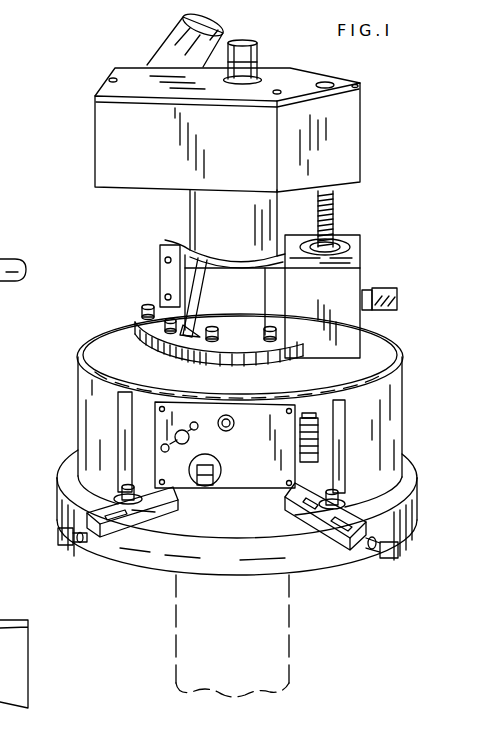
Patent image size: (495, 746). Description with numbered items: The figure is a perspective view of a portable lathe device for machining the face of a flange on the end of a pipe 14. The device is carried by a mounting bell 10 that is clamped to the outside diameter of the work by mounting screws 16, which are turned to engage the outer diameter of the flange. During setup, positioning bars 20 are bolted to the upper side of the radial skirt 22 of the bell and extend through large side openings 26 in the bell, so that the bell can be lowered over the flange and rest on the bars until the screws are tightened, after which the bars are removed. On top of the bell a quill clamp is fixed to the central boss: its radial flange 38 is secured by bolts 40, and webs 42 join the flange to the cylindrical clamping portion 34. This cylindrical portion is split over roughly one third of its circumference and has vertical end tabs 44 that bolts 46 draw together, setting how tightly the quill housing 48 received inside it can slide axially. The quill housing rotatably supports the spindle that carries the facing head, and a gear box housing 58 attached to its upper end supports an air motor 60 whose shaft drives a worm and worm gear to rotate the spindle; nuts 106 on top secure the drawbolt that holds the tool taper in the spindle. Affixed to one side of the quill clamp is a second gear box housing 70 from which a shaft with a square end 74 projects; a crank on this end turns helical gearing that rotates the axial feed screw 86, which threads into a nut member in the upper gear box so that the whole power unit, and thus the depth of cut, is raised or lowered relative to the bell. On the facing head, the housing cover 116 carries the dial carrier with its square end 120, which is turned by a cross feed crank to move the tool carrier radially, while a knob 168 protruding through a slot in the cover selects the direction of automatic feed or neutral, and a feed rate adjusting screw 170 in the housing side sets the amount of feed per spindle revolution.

The mounting bell 10 is at (78, 345).
The pipe 14 is at (290, 636).
The mounting screws 16 is at (58, 533).
The positioning bars 20 is at (100, 540).
The radial skirt 22 is at (222, 568).
The side openings 26 is at (120, 410).
The cylindrical clamping portion 34 is at (190, 262).
The radial flange 38 is at (244, 345).
The bolts 40 is at (144, 310).
The webs 42 is at (205, 306).
The vertical end tabs 44 is at (160, 268).
The bolts 46 is at (165, 260).
The quill housing 48 is at (193, 206).
The gear box housing 58 is at (128, 74).
The air motor 60 is at (160, 40).
The second gear box housing 70 is at (306, 306).
The square end 74 is at (384, 288).
The axial feed screw 86 is at (336, 208).
The nuts 106 is at (260, 66).
The housing cover 116 is at (241, 481).
The square end 120 is at (205, 488).
The knob 168 is at (193, 445).
The feed rate adjusting screw 170 is at (322, 447).